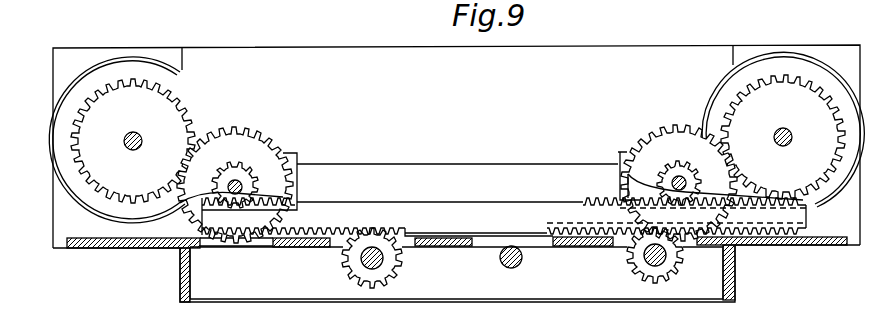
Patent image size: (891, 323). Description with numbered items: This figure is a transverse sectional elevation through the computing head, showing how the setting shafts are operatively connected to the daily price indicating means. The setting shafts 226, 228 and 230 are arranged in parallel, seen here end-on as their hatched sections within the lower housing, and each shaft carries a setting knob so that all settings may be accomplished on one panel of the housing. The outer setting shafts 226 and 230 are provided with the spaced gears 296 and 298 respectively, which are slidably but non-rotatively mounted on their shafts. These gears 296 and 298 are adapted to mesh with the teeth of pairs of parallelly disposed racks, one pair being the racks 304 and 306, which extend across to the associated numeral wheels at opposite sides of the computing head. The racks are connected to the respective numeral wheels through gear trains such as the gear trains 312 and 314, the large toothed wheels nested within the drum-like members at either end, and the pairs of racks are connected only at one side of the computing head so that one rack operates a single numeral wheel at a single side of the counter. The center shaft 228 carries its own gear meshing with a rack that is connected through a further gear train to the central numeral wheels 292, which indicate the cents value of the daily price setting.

The numeral wheel 292 is at (117, 67).
The gear train 314 is at (803, 97).
The gear train 312 is at (670, 140).
The rack 306 is at (352, 230).
The rack 304 is at (445, 207).
The gear 298 is at (393, 270).
The setting shaft 230 is at (352, 263).
The setting shaft 228 is at (517, 268).
The gear 296 is at (637, 265).
The setting shaft 226 is at (663, 265).